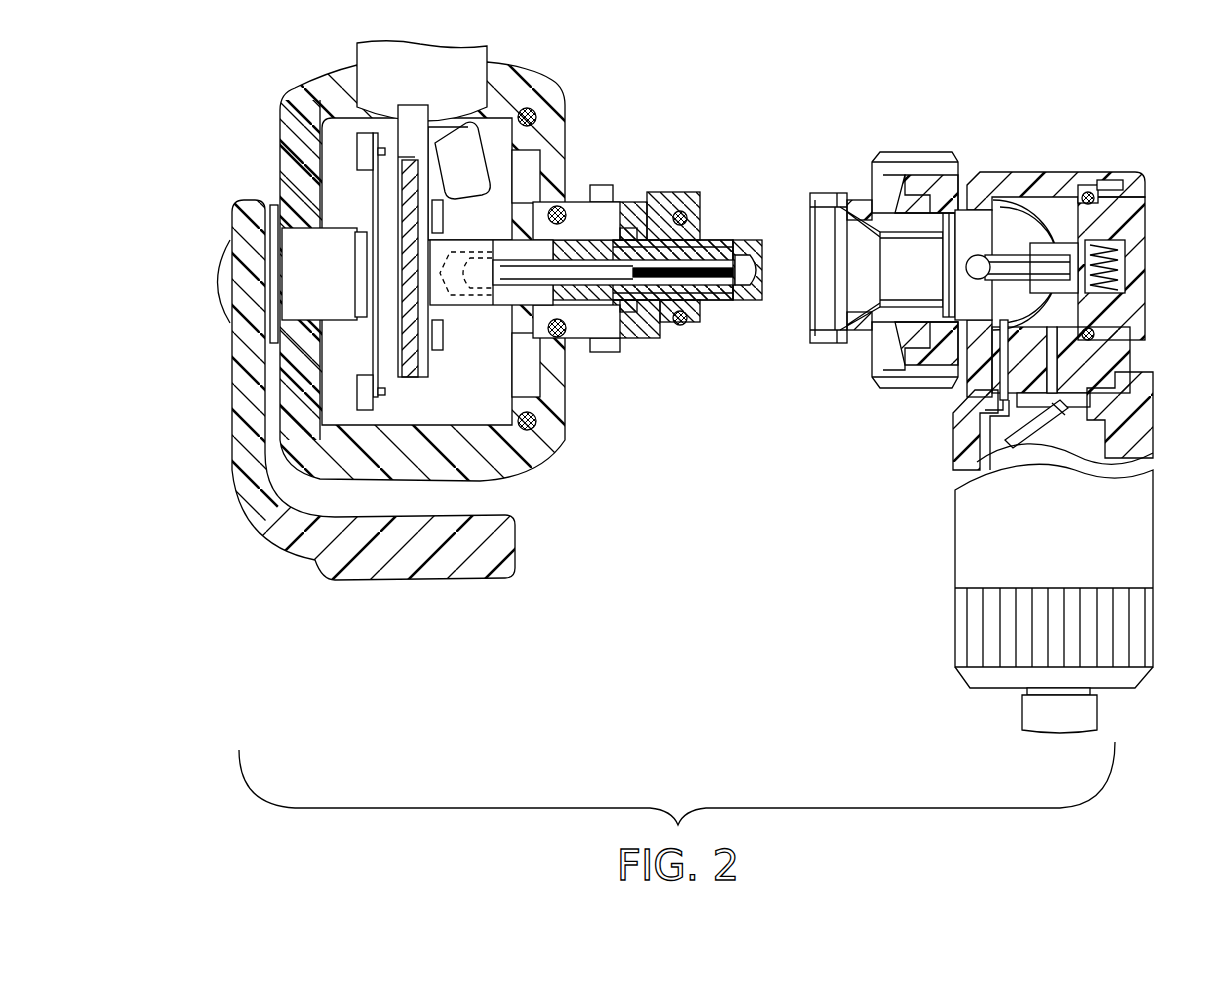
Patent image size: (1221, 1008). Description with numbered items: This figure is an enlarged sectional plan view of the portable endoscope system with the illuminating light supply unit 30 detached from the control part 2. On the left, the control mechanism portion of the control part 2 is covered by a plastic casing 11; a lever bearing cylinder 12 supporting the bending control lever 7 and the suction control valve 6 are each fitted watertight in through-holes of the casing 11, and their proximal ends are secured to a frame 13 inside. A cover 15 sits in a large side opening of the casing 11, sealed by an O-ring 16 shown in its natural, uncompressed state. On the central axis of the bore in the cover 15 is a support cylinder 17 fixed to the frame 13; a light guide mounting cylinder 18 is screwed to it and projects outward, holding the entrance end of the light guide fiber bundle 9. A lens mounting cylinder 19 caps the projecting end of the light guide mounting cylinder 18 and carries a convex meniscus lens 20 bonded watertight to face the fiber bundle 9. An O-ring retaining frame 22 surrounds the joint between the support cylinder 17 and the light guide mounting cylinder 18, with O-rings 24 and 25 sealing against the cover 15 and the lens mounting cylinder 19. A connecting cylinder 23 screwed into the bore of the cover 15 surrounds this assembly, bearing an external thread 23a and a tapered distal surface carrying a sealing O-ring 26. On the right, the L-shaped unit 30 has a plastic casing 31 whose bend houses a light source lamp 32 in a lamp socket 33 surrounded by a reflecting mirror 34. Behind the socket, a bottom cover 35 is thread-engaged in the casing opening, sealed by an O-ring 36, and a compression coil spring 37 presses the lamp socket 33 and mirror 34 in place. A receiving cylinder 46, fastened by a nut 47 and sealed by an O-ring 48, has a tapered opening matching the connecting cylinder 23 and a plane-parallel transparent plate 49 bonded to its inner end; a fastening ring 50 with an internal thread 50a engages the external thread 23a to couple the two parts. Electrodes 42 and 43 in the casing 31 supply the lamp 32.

The control part 2 is at (592, 474).
The suction control valve 6 is at (357, 62).
The bending control lever 7 is at (238, 494).
The light guide fiber bundle 9 is at (722, 264).
The casing 11 is at (498, 477).
The lever bearing cylinder 12 is at (300, 328).
The frame 13 is at (405, 200).
The cover 15 is at (567, 122).
The sealing O-ring 16 is at (530, 110).
The support cylinder 17 is at (512, 300).
The light guide mounting cylinder 18 is at (730, 292).
The lens mounting cylinder 19 is at (737, 300).
The convex meniscus lens 20 is at (740, 258).
The O-ring retaining frame 22 is at (573, 335).
The connecting cylinder 23 is at (643, 343).
The external thread 23a is at (650, 195).
The O-ring 24 is at (575, 205).
The O-ring 25 is at (632, 205).
The sealing O-ring 26 is at (682, 211).
The illuminating light supply unit 30 is at (989, 126).
The casing 31 is at (1150, 428).
The light source lamp 32 is at (998, 265).
The lamp socket 33 is at (1067, 197).
The reflecting mirror 34 is at (1000, 207).
The bottom cover 35 is at (1135, 203).
The sealing O-ring 36 is at (1095, 200).
The compression coil spring 37 is at (1110, 252).
The electrode 42 is at (960, 462).
The electrode 43 is at (1085, 327).
The receiving cylinder 46 is at (860, 205).
The nut 47 is at (947, 342).
The sealing O-ring 48 is at (872, 347).
The plane-parallel transparent plate 49 is at (945, 252).
The fastening ring 50 is at (907, 153).
The internal thread 50a is at (817, 200).